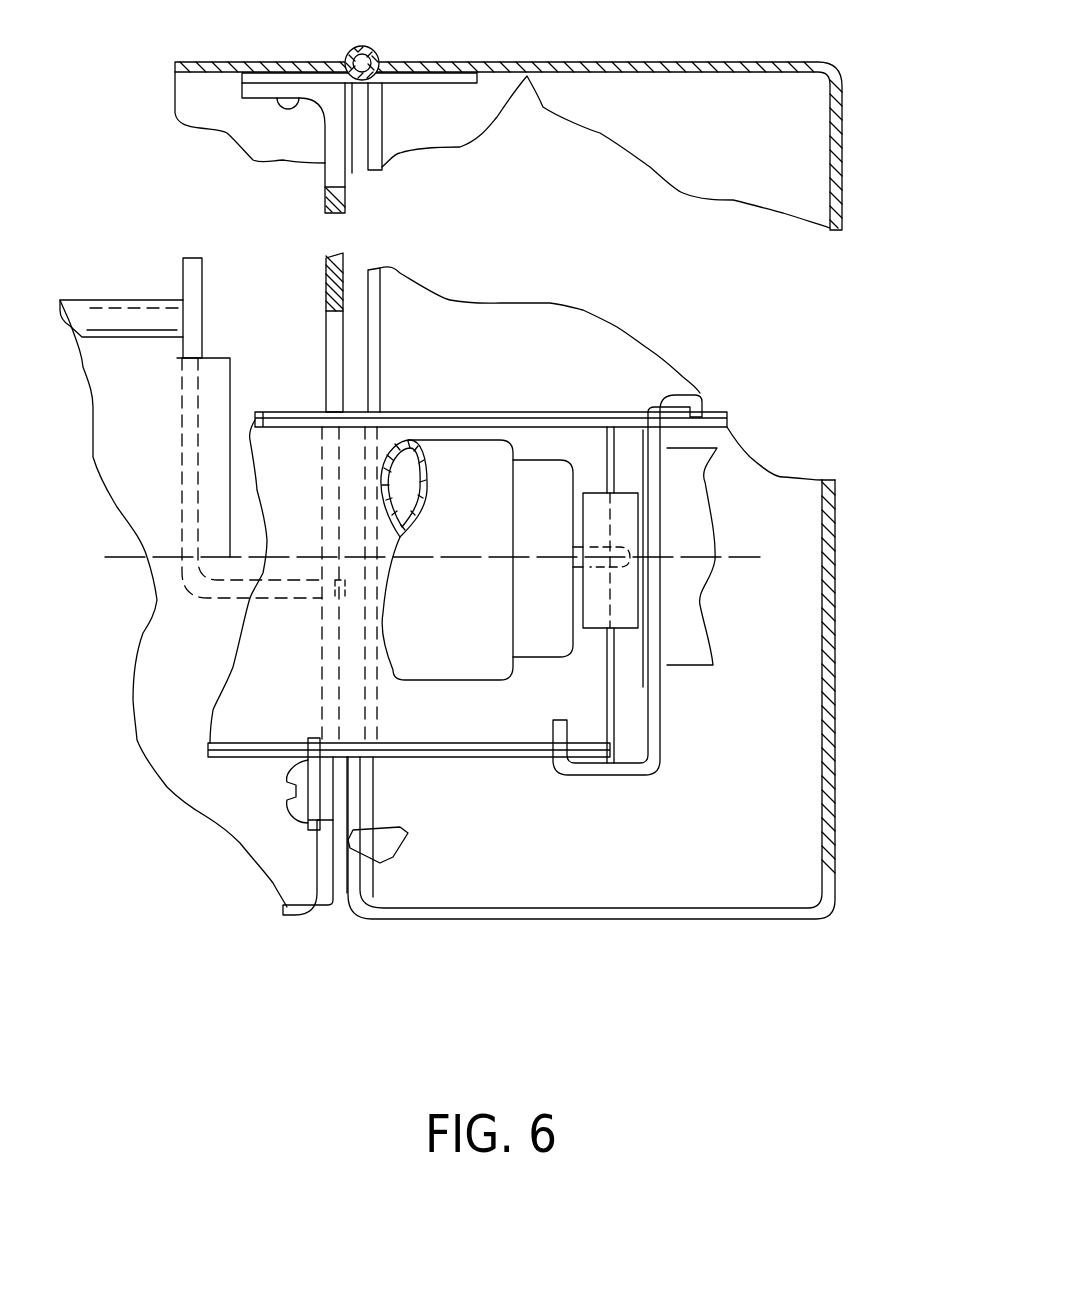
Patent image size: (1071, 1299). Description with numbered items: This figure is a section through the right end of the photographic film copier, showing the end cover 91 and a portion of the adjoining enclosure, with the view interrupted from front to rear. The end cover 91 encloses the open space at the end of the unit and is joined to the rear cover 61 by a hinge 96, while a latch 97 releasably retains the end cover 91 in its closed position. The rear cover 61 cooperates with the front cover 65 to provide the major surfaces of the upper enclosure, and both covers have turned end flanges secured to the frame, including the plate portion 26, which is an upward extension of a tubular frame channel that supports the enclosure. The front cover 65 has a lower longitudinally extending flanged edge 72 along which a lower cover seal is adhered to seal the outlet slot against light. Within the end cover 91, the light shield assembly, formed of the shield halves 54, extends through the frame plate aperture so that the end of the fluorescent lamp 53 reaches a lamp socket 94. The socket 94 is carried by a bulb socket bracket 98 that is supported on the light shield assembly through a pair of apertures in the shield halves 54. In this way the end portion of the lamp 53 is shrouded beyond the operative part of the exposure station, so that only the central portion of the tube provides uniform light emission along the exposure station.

The rear cover 61 is at (213, 61).
The hinge 96 is at (376, 50).
The lower longitudinally extending flanged edge 72 is at (142, 340).
The plate portion 26 is at (323, 337).
The light shield half 54 is at (463, 410).
The fluorescent lamp 53 is at (453, 682).
The lamp socket 94 is at (687, 667).
The end cover 91 is at (835, 687).
The latch 97 is at (400, 827).
The bulb socket bracket 98 is at (630, 777).
The front cover 65 is at (303, 917).